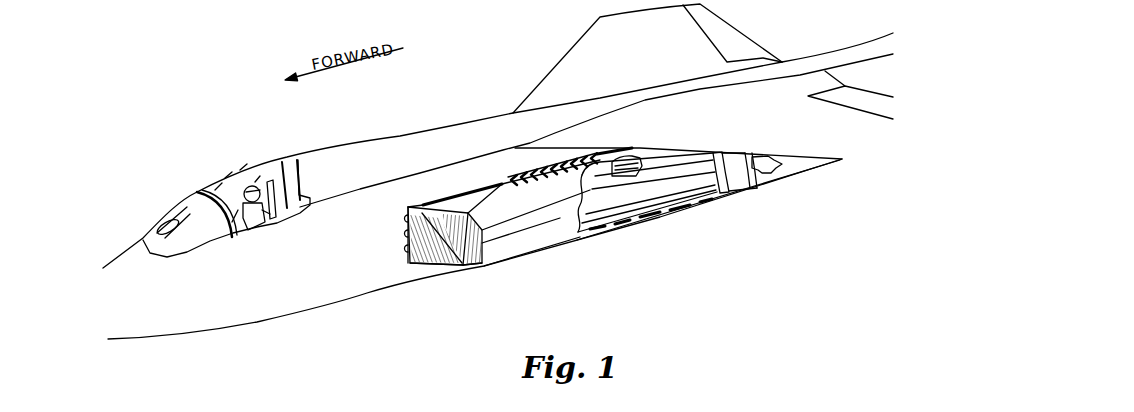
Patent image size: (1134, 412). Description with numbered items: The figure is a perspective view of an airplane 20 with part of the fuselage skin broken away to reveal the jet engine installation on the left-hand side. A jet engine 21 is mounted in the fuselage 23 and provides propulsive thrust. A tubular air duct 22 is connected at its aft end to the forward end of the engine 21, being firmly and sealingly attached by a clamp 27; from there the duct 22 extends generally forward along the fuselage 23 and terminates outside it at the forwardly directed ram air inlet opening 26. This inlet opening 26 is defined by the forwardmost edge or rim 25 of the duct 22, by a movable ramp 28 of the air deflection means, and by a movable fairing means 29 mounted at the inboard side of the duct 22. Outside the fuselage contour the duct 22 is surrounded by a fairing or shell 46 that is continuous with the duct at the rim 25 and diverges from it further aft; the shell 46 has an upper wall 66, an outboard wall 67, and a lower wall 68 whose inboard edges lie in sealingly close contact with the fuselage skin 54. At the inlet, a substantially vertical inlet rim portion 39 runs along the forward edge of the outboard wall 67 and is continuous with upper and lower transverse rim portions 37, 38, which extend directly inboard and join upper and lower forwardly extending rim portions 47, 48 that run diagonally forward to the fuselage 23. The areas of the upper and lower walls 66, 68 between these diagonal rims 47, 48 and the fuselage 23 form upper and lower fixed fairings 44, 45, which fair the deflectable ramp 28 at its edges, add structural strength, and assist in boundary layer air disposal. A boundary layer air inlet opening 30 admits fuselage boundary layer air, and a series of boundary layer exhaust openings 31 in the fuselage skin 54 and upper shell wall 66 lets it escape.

The airplane 20 is at (356, 143).
The jet engine 21 is at (732, 170).
The tubular air duct 22 is at (672, 187).
The airplane fuselage 23 is at (260, 324).
The forwardmost edge or rim of the duct 25 is at (490, 227).
The ram air inlet opening 26 is at (479, 222).
The clamp 27 is at (723, 170).
The movable ramp 28 is at (422, 252).
The movable fairing means 29 is at (463, 258).
The boundary layer air inlet opening 30 is at (405, 244).
The boundary layer exhaust openings 31 is at (510, 173).
The upper transverse rim portion 37 is at (482, 218).
The lower transverse rim portion 38 is at (475, 268).
The vertical inlet rim portion 39 is at (483, 243).
The upper fixed fairing 44 is at (412, 243).
The lower fixed fairing 45 is at (407, 262).
The fairing or shell 46 is at (632, 163).
The upper forwardly extending rim portion 47 is at (423, 205).
The lower forwardly extending rim portion 48 is at (437, 267).
The fuselage skin 54 is at (289, 282).
The upper wall of the shell 66 is at (457, 200).
The outboard wall of the shell 67 is at (545, 228).
The lower wall of the shell 68 is at (485, 265).